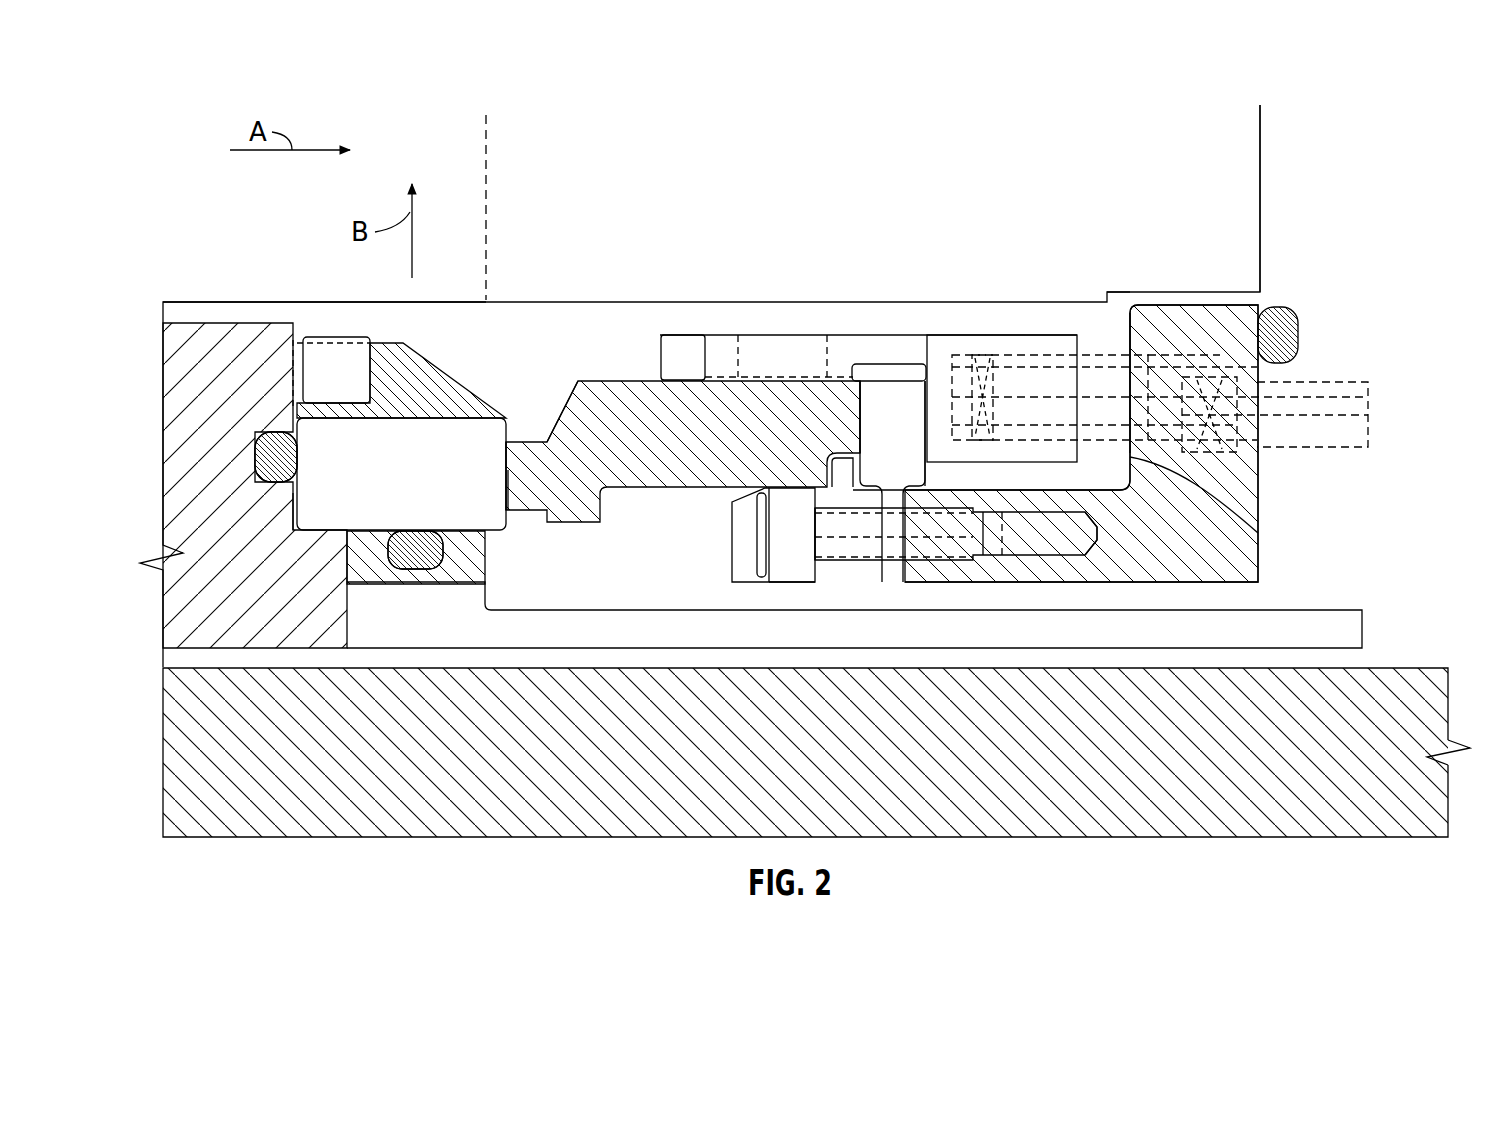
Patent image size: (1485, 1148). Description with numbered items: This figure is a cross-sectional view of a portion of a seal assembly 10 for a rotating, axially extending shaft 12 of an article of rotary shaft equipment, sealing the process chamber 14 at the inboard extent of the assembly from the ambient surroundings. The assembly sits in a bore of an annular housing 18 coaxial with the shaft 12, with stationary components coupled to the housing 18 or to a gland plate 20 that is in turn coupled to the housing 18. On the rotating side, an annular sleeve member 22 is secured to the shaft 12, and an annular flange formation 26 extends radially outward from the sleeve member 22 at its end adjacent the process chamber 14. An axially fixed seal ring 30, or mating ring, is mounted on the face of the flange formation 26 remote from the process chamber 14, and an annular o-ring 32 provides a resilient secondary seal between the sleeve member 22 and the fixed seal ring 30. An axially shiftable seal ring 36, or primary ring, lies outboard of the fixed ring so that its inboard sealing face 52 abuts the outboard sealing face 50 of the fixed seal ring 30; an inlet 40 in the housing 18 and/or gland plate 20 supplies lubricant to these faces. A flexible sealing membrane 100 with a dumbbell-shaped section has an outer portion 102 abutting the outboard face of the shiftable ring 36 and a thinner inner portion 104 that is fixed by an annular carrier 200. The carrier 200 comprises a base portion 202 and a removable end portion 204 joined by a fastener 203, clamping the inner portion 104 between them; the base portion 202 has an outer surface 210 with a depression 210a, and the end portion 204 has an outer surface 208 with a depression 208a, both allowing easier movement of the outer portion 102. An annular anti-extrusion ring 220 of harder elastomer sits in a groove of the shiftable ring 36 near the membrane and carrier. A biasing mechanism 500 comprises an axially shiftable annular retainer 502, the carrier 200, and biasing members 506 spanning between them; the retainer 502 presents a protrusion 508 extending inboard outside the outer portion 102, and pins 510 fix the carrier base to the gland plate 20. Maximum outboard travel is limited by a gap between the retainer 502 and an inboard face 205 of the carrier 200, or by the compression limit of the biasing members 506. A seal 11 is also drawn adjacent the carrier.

The seal assembly 10 is at (215, 182).
The seal 11 is at (1250, 297).
The shaft 12 is at (581, 773).
The process chamber 14 is at (97, 614).
The annular housing 18 is at (1074, 243).
The gland plate 20 is at (1296, 233).
The annular sleeve member 22 is at (558, 633).
The annular flange formation 26 is at (246, 622).
The axially fixed seal ring 30 is at (413, 438).
The annular o-ring 32 is at (413, 557).
The axially shiftable seal ring 36 is at (572, 400).
The inlet 40 is at (485, 153).
The outboard sealing face 50 is at (500, 470).
The inboard sealing face 52 is at (512, 489).
The sealing membrane 100 is at (890, 398).
The outer portion 102 is at (873, 449).
The inner portion 104 is at (897, 568).
The annular carrier 200 is at (1115, 447).
The base portion 202 is at (1228, 555).
The fastener 203 is at (830, 532).
The removable end portion 204 is at (820, 572).
The inboard face 205 is at (1258, 533).
The outer surface 208 is at (682, 447).
The depression 208a is at (863, 500).
The outer surface 210 is at (937, 565).
The depression 210a is at (907, 497).
The annular anti-extrusion ring 220 is at (840, 472).
The biasing mechanism 500 is at (1123, 313).
The axially shiftable annular retainer 502 is at (917, 363).
The biasing members 506 is at (1103, 365).
The protrusion 508 is at (908, 343).
The pins 510 is at (1325, 413).